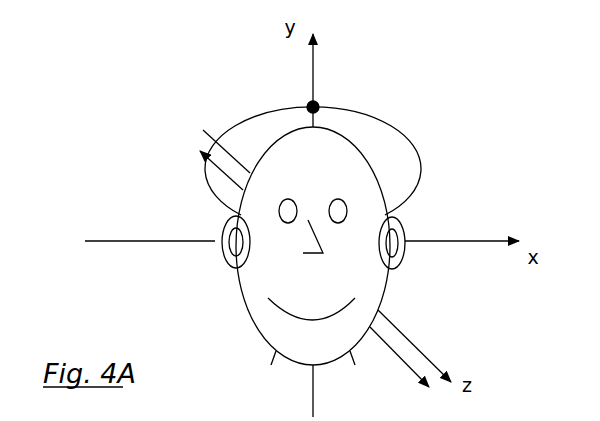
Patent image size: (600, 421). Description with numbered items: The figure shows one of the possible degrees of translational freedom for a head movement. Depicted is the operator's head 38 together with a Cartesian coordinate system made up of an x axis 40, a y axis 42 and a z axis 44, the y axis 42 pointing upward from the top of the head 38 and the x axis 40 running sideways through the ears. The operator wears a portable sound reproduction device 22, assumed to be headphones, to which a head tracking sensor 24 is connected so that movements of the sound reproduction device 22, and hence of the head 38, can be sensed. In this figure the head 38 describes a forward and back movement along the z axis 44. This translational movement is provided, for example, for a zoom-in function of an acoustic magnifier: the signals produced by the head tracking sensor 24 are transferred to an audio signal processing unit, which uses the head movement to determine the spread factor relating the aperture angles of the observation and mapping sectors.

The portable sound reproduction device 22 is at (407, 241).
The head tracking sensor 24 is at (318, 106).
The head 38 is at (353, 172).
The x axis 40 is at (453, 241).
The y axis 42 is at (318, 103).
The z axis 44 is at (413, 342).